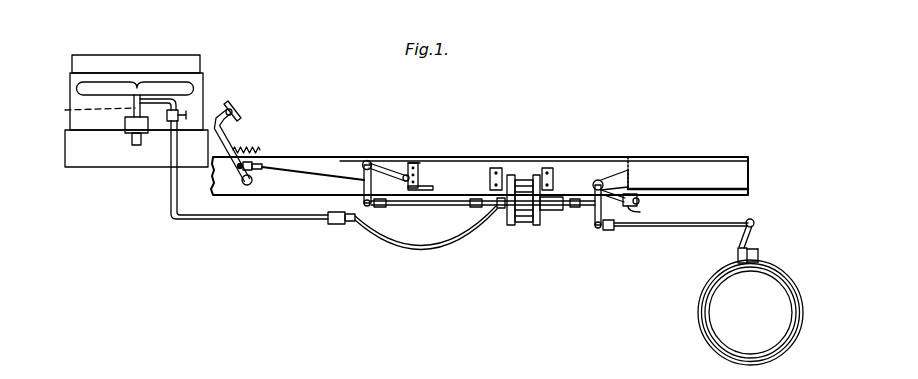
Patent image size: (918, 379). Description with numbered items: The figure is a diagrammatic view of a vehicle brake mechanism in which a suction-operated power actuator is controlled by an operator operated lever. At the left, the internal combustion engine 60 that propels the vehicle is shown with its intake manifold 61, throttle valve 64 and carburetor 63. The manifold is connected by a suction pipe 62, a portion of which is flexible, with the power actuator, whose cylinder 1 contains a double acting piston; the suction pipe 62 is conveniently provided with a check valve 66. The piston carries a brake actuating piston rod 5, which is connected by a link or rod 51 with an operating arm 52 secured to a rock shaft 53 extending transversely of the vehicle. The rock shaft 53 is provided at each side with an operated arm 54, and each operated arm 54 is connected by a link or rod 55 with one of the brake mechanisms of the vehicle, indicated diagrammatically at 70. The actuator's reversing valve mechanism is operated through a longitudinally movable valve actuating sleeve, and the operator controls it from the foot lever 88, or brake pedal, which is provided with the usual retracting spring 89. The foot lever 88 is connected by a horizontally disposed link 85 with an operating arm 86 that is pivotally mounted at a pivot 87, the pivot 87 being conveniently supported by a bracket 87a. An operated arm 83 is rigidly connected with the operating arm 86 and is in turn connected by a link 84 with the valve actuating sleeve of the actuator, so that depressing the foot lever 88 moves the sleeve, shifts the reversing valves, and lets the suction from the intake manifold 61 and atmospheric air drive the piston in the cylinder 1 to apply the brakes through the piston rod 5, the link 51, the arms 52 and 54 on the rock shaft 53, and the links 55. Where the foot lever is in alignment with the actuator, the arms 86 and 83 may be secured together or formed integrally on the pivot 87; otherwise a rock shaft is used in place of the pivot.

The cylinder 1 is at (523, 216).
The piston rod 5 is at (556, 210).
The link or rod 51 is at (638, 206).
The operating arm 52 is at (668, 192).
The rock shaft 53 is at (598, 180).
The operated arm 54 is at (597, 215).
The link or rod 55 is at (672, 227).
The internal combustion engine 60 is at (177, 62).
The intake manifold 61 is at (187, 88).
The suction pipe 62 is at (258, 220).
The carburetor 63 is at (129, 133).
The throttle valve 64 is at (89, 110).
The check valve 66 is at (338, 225).
The brake mechanism 70 is at (767, 327).
The operated arm 83 is at (363, 196).
The link 84 is at (440, 206).
The horizontally disposed link 85 is at (317, 174).
The operating arm 86 is at (390, 170).
The pivot 87 is at (367, 161).
The bracket 87a is at (415, 167).
The foot lever 88 is at (236, 140).
The retracting spring 89 is at (264, 150).